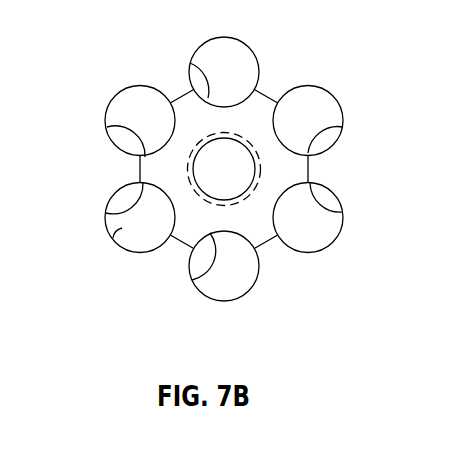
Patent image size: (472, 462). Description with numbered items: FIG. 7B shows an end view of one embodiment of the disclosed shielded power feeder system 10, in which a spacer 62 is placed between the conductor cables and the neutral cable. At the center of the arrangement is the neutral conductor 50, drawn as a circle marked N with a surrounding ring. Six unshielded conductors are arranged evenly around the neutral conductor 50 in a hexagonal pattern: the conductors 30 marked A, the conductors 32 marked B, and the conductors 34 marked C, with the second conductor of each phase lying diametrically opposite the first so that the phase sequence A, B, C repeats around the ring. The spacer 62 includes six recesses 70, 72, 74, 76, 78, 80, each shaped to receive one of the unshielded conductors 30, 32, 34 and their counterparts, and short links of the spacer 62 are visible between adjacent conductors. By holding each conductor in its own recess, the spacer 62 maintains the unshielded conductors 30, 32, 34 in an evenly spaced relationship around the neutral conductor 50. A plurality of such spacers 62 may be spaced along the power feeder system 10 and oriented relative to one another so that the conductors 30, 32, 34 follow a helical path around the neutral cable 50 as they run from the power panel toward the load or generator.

The shielded power feeder system 10 is at (256, 107).
The unshielded conductor 30 is at (118, 117).
The unshielded conductor 32 is at (228, 45).
The unshielded conductor 34 is at (339, 117).
The neutral conductor 50 is at (210, 188).
The spacer 62 is at (306, 176).
The recess 70 is at (110, 128).
The recess 72 is at (194, 272).
The recess 74 is at (342, 131).
The recess 76 is at (343, 209).
The recess 78 is at (190, 65).
The recess 80 is at (106, 211).